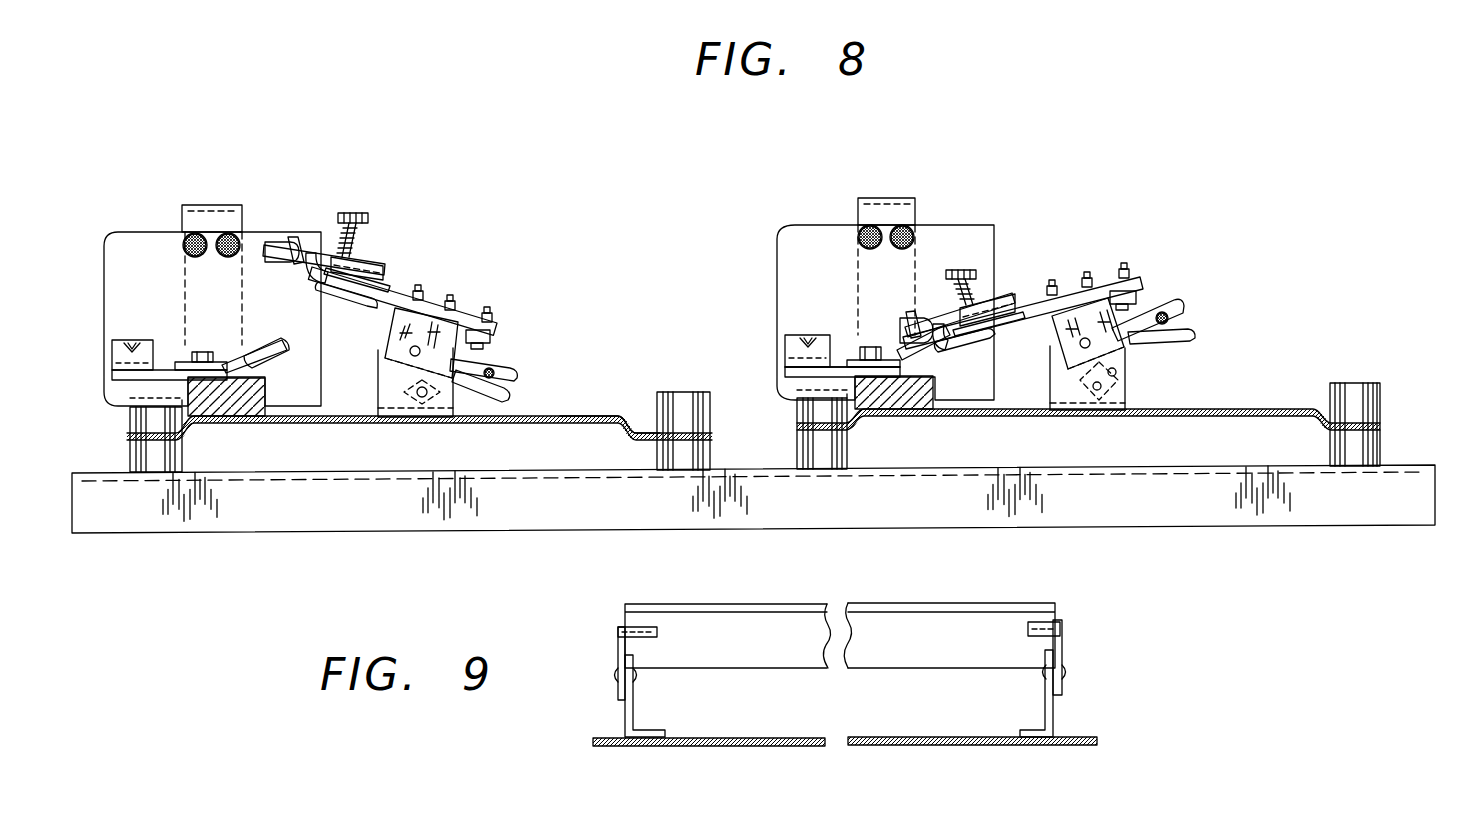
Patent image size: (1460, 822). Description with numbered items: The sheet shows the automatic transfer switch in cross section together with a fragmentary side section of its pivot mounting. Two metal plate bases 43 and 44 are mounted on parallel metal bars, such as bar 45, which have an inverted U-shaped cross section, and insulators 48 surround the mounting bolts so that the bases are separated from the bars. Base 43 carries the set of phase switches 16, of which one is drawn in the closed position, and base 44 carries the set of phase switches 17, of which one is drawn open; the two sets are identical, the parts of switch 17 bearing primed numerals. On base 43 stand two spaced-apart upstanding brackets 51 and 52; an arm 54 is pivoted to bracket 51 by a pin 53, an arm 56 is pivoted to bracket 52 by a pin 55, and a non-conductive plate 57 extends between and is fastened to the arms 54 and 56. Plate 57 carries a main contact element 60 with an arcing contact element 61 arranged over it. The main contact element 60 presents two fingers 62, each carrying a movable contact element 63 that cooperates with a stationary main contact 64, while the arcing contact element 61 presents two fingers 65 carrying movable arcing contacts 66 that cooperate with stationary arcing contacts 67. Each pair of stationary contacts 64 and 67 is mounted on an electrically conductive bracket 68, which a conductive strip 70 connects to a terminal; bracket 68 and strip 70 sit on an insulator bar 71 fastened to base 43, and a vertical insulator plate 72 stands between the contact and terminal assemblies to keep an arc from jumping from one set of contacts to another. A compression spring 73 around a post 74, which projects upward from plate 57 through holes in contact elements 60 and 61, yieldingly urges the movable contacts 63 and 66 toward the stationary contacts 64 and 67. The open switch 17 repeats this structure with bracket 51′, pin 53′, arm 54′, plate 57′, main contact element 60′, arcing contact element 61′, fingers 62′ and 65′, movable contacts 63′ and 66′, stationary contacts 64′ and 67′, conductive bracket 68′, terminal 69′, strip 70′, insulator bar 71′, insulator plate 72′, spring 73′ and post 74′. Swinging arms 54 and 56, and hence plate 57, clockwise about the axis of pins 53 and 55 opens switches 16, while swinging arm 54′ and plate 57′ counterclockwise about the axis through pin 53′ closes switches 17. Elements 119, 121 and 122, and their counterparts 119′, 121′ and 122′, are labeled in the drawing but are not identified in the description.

In FIG. 8, the phase switches 16 is at (1005, 214).
In FIG. 8, the phase switches 17 is at (470, 224).
In FIG. 8, the metal plate base 43 is at (1222, 417).
In FIG. 9, the metal plate base 43 is at (920, 746).
In FIG. 8, the metal plate base 44 is at (582, 416).
In FIG. 8, the metal bar 45 is at (1068, 516).
In FIG. 8, the insulator 48 is at (172, 452).
In FIG. 8, the bracket 51 is at (1125, 394).
In FIG. 9, the bracket 51 is at (624, 722).
In FIG. 9, the bracket 52 is at (1052, 700).
In FIG. 8, the pin 53 is at (1082, 345).
In FIG. 9, the pin 53 is at (614, 676).
In FIG. 8, the arm 54 is at (1088, 333).
In FIG. 9, the arm 54 is at (620, 630).
In FIG. 9, the pin 55 is at (1070, 668).
In FIG. 9, the arm 56 is at (1060, 626).
In FIG. 8, the non-conductive plate 57 is at (1072, 296).
In FIG. 9, the non-conductive plate 57 is at (922, 607).
In FIG. 8, the main contact element 60 is at (962, 340).
In FIG. 8, the arcing contact element 61 is at (1013, 294).
In FIG. 8, the finger 62 is at (915, 325).
In FIG. 8, the movable contact element 63 is at (914, 312).
In FIG. 8, the stationary main contact 64 is at (955, 332).
In FIG. 8, the finger 65 is at (902, 333).
In FIG. 8, the movable arcing contact 66 is at (905, 332).
In FIG. 8, the stationary arcing contact 67 is at (946, 378).
In FIG. 8, the electrically conductive bracket 68 is at (838, 366).
In FIG. 8, the conductive strip 70 is at (820, 378).
In FIG. 8, the insulator bar 71 is at (895, 402).
In FIG. 8, the vertical insulator plate 72 is at (790, 252).
In FIG. 8, the compression spring 73 is at (990, 293).
In FIG. 8, the post 74 is at (958, 270).
In FIG. 8, the contact arm 119 is at (1177, 300).
In FIG. 8, the contact strip 121 is at (1180, 336).
In FIG. 8, the contact screw 122 is at (1171, 318).
In FIG. 8, the bracket 51′ is at (405, 408).
In FIG. 8, the pin 53′ is at (398, 348).
In FIG. 8, the arm 54′ is at (396, 320).
In FIG. 8, the non-conductive plate 57′ is at (438, 306).
In FIG. 8, the main contact element 60′ is at (326, 290).
In FIG. 8, the arcing contact element 61′ is at (382, 266).
In FIG. 8, the finger 62′ is at (300, 248).
In FIG. 8, the movable contact element 63′ is at (296, 262).
In FIG. 8, the stationary main contact 64′ is at (270, 352).
In FIG. 8, the finger 65′ is at (280, 242).
In FIG. 8, the movable arcing contact 66′ is at (270, 258).
In FIG. 8, the stationary arcing contact 67′ is at (202, 353).
In FIG. 8, the electrically conductive bracket 68′ is at (321, 362).
In FIG. 8, the terminal 69′ is at (120, 346).
In FIG. 8, the conductive strip 70′ is at (165, 373).
In FIG. 8, the insulator bar 71′ is at (238, 404).
In FIG. 8, the vertical insulator plate 72′ is at (147, 242).
In FIG. 8, the compression spring 73′ is at (356, 256).
In FIG. 8, the post 74′ is at (352, 213).
In FIG. 8, the contact arm 119′ is at (512, 369).
In FIG. 8, the contact strip 121′ is at (498, 396).
In FIG. 8, the contact screw 122′ is at (494, 368).